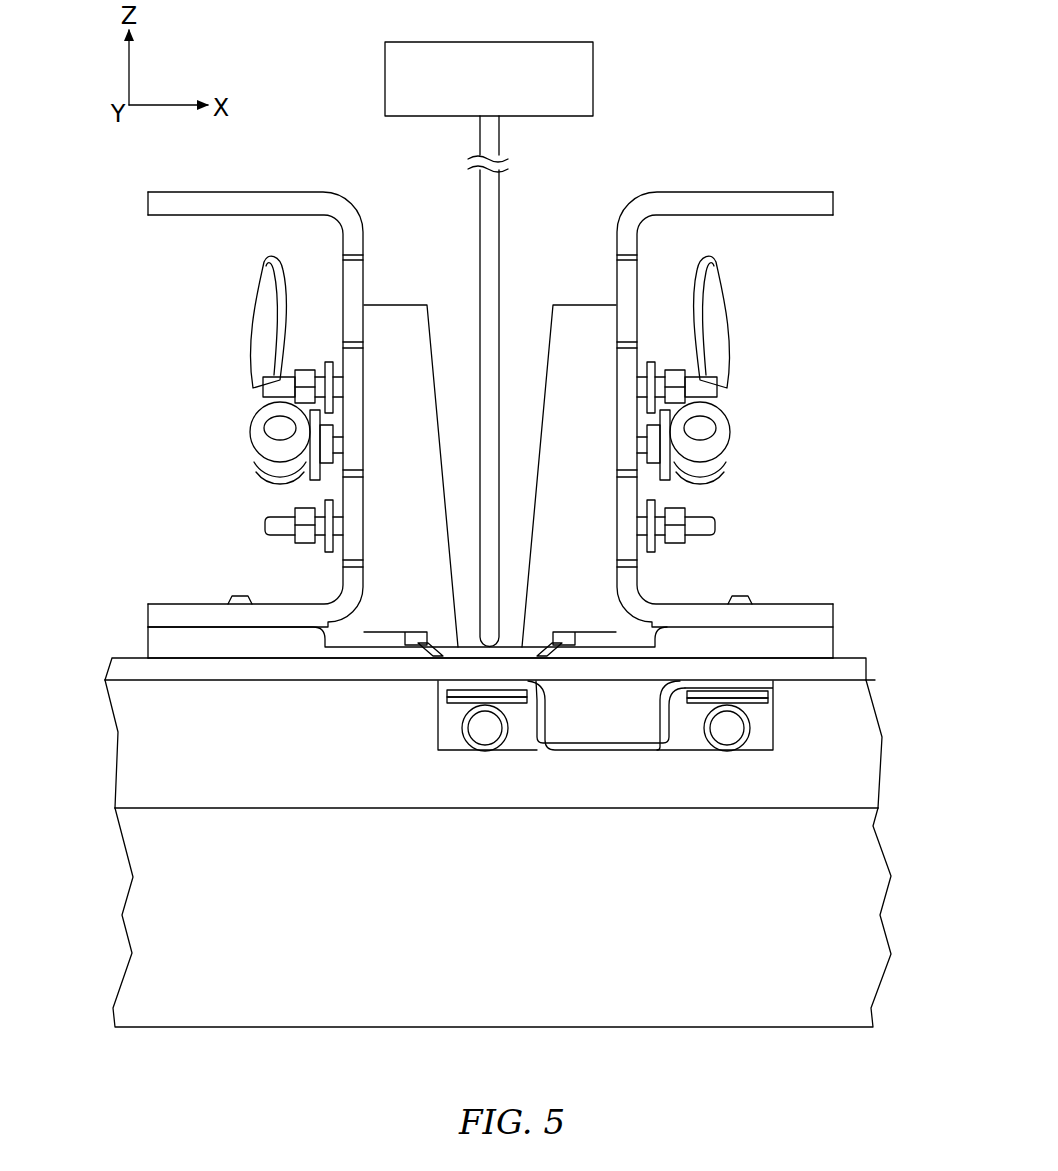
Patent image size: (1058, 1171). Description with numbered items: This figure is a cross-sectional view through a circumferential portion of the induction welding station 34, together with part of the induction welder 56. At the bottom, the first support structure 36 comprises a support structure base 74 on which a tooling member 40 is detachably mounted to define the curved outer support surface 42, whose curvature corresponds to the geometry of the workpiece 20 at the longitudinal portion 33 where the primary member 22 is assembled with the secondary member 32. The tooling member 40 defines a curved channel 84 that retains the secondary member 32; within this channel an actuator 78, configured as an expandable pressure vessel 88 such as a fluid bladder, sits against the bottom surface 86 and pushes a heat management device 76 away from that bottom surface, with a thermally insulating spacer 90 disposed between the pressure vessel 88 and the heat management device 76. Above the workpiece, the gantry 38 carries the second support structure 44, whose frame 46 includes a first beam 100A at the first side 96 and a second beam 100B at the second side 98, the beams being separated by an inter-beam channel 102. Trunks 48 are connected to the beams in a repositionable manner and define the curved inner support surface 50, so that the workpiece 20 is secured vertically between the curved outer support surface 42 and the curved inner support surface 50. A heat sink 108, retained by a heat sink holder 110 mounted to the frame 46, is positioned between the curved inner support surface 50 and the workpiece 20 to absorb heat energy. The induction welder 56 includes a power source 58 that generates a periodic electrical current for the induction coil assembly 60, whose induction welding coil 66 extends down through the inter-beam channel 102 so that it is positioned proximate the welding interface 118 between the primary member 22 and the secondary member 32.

The workpiece 20 is at (870, 640).
The primary member 22 is at (285, 668).
The secondary member 32 is at (648, 750).
The longitudinal portion 33 is at (490, 1030).
The induction welding station 34 is at (870, 145).
The first support structure 36 is at (880, 695).
The gantry 38 is at (112, 183).
The tooling member 40 is at (870, 792).
The curved outer support surface 42 is at (138, 680).
The second support structure 44 is at (840, 562).
The frame 46 is at (330, 170).
The trunk 48 is at (395, 325).
The curved inner support surface 50 is at (437, 660).
The induction welder 56 is at (632, 96).
The power source 58 is at (593, 56).
The induction coil assembly 60 is at (450, 258).
The induction welding coil 66 is at (507, 640).
The support structure base 74 is at (865, 965).
The heat management device 76 is at (445, 692).
The actuator 78 is at (510, 740).
The curved channel 84 is at (440, 752).
The bottom surface 86 is at (675, 746).
The expandable pressure vessel 88 is at (440, 730).
The spacer 90 is at (512, 700).
The first side 96 is at (825, 378).
The second side 98 is at (160, 393).
The first beam 100A is at (775, 205).
The second beam 100B is at (205, 205).
The inter-beam channel 102 is at (548, 230).
The heat sink 108 is at (460, 656).
The heat sink holder 110 is at (790, 630).
The welding interface 118 is at (493, 670).